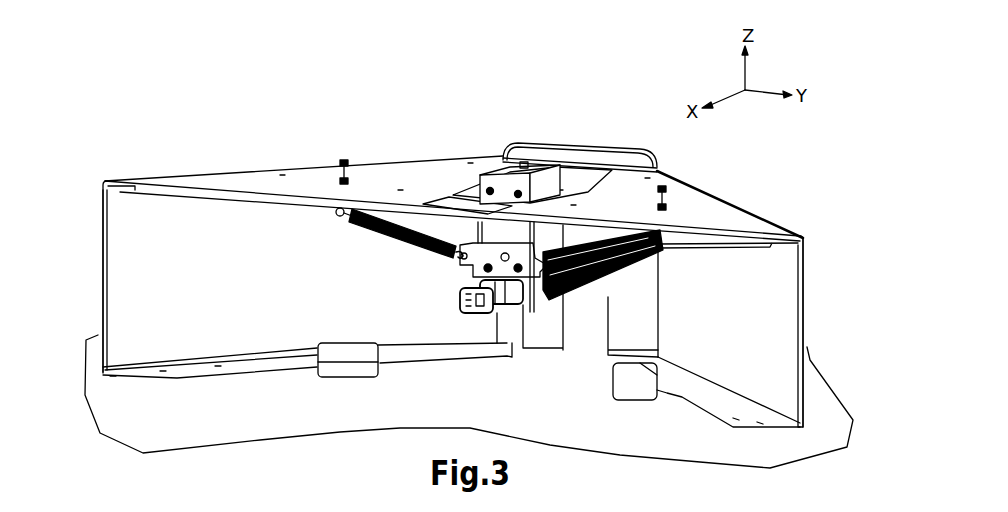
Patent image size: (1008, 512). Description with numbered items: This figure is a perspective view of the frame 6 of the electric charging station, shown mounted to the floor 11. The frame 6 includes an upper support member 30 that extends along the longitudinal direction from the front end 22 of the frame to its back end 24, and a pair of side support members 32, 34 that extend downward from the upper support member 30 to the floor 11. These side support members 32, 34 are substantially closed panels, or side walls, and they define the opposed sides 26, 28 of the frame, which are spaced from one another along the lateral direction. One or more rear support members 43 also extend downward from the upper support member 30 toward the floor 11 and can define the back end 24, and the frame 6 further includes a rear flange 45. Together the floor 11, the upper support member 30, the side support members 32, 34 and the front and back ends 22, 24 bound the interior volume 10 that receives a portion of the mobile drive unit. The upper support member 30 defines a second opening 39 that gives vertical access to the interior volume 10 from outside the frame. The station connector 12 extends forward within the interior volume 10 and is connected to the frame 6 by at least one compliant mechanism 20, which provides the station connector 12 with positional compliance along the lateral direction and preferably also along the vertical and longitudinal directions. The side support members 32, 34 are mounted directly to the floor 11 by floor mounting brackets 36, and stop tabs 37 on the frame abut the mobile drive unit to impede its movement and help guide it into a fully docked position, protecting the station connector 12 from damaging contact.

The frame 6 is at (348, 130).
The interior volume 10 is at (560, 400).
The floor 11 is at (442, 402).
The station connector 12 is at (498, 313).
The compliant mechanism 20 is at (638, 236).
The front end 22 is at (233, 197).
The back end 24 is at (583, 148).
The side 26 is at (247, 284).
The side 28 is at (723, 315).
The upper support member 30 is at (418, 180).
The side support member 32 is at (100, 276).
The side support member 34 is at (808, 305).
The floor mounting bracket 36 is at (247, 363).
The stop tab 37 is at (340, 358).
The second opening 39 is at (463, 190).
The rear support member 43 is at (633, 320).
The rear flange 45 is at (543, 152).